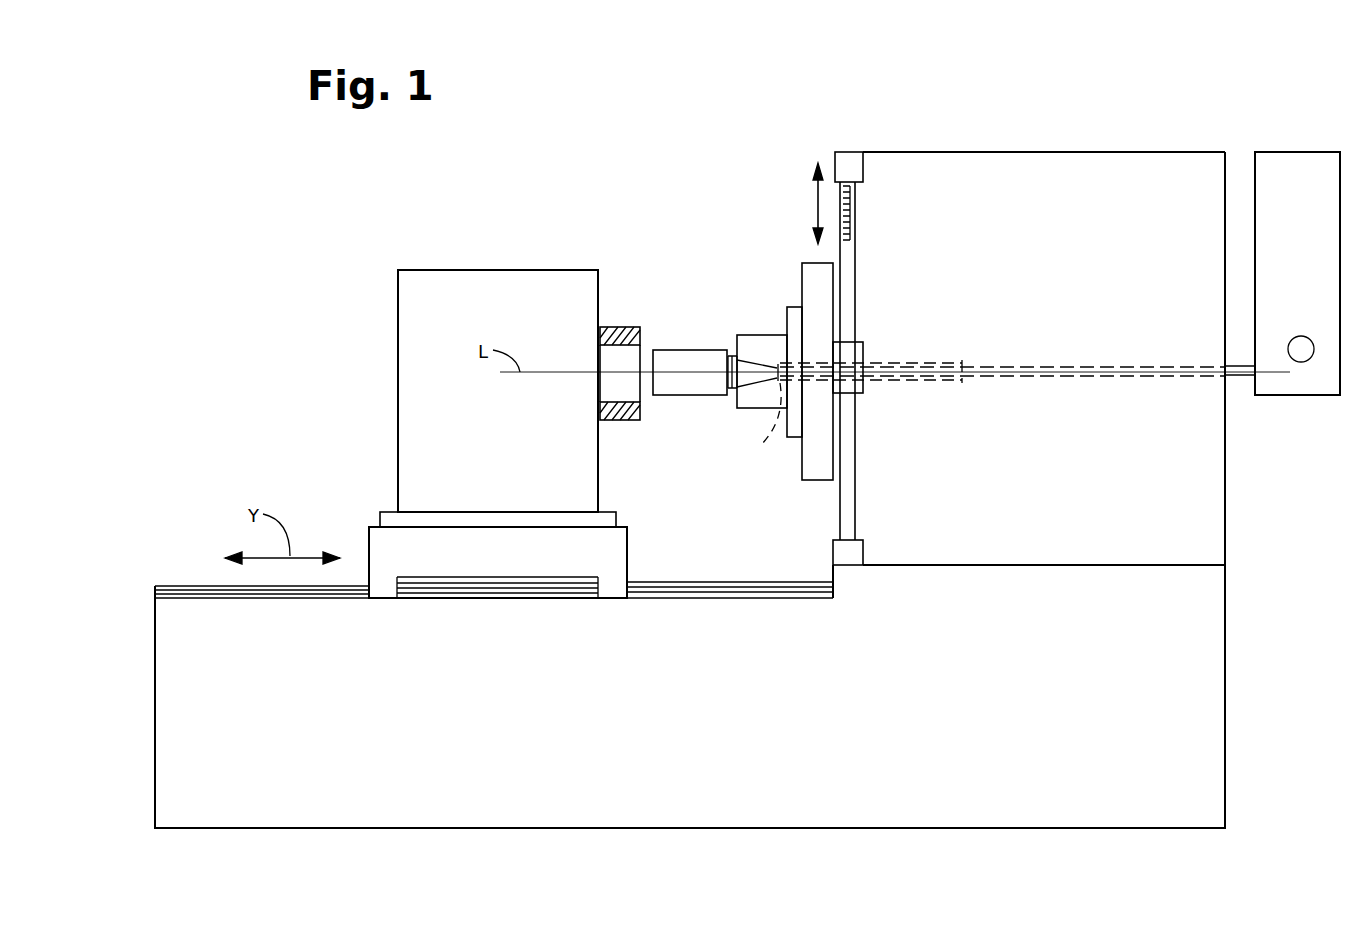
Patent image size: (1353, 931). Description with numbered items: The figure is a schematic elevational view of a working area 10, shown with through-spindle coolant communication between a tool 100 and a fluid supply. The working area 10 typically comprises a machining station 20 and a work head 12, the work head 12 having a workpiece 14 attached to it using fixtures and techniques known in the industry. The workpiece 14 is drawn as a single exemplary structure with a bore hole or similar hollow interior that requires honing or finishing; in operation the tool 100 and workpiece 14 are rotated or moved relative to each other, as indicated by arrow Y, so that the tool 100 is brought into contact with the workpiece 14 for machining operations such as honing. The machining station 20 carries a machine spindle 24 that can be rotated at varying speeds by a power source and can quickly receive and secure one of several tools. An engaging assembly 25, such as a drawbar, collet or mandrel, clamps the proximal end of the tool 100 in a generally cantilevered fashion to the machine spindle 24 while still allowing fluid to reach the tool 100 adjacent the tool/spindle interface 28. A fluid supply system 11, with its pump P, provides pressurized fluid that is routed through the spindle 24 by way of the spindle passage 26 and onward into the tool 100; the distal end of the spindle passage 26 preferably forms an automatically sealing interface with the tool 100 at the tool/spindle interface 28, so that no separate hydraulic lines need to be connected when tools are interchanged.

The working area 10 is at (1025, 80).
The fluid supply system 11 is at (1290, 168).
The work head 12 is at (472, 247).
The workpiece 14 is at (616, 327).
The machining station 20 is at (1085, 165).
The machine spindle 24 is at (905, 362).
The engaging assembly 25 is at (766, 320).
The spindle passage 26 is at (1110, 362).
The tool/spindle interface 28 is at (757, 428).
The tool 100 is at (692, 322).